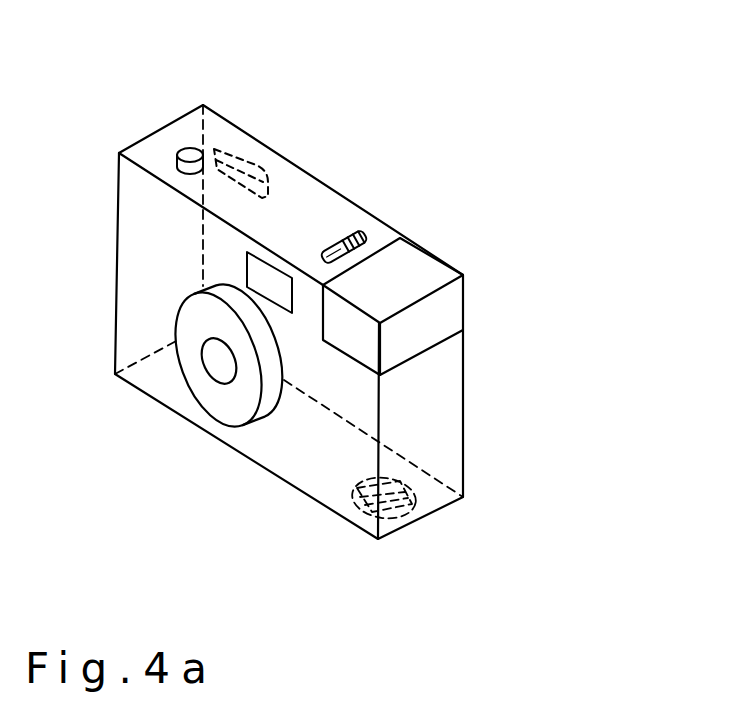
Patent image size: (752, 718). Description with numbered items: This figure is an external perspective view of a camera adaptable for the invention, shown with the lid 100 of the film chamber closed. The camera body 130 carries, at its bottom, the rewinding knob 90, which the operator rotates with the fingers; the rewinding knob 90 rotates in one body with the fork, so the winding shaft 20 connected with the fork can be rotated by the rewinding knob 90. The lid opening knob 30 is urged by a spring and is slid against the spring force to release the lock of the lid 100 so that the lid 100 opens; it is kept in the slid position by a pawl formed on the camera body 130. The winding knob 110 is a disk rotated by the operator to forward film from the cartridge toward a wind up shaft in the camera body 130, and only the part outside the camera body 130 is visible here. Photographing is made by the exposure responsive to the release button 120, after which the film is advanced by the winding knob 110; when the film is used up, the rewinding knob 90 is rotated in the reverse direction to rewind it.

The camera body 130 is at (450, 413).
The lid 100 is at (410, 272).
The release button 120 is at (183, 149).
The winding knob 110 is at (245, 160).
The lid opening knob 30 is at (362, 232).
The rewinding knob 90 is at (352, 503).
The winding shaft 20 is at (220, 360).